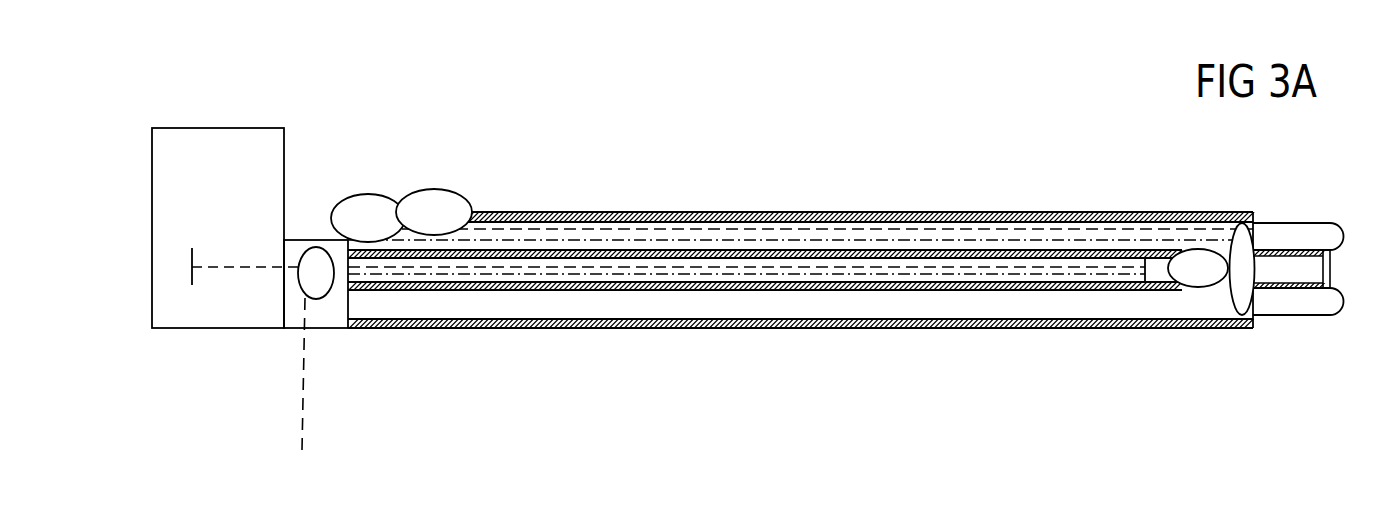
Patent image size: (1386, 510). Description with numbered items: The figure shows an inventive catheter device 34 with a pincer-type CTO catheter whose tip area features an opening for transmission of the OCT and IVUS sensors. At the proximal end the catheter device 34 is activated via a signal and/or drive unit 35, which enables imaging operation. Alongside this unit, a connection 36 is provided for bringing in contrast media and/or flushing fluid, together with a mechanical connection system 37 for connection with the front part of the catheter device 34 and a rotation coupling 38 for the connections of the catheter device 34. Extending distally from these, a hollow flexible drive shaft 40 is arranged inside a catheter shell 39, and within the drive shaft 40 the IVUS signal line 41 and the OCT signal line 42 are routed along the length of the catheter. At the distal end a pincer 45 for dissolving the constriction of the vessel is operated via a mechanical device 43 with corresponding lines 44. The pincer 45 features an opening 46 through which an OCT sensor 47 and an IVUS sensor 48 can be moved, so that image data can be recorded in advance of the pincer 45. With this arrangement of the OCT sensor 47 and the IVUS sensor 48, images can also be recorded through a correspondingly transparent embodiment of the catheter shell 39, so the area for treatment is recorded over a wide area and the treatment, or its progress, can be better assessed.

The catheter device 34 is at (995, 177).
The signal and/or drive unit 35 is at (217, 135).
The connection 36 is at (302, 415).
The mechanical connection system 37 is at (298, 248).
The rotation coupling 38 is at (317, 292).
The catheter shell 39 is at (873, 218).
The hollow flexible drive shaft 40 is at (675, 290).
The IVUS signal line 41 is at (955, 290).
The OCT signal line 42 is at (1008, 283).
The mechanical device 43 is at (400, 193).
The lines 44 is at (737, 240).
The pincer 45 is at (1295, 305).
The opening 46 is at (1310, 268).
The OCT sensor 47 is at (1157, 268).
The IVUS sensor 48 is at (1205, 277).